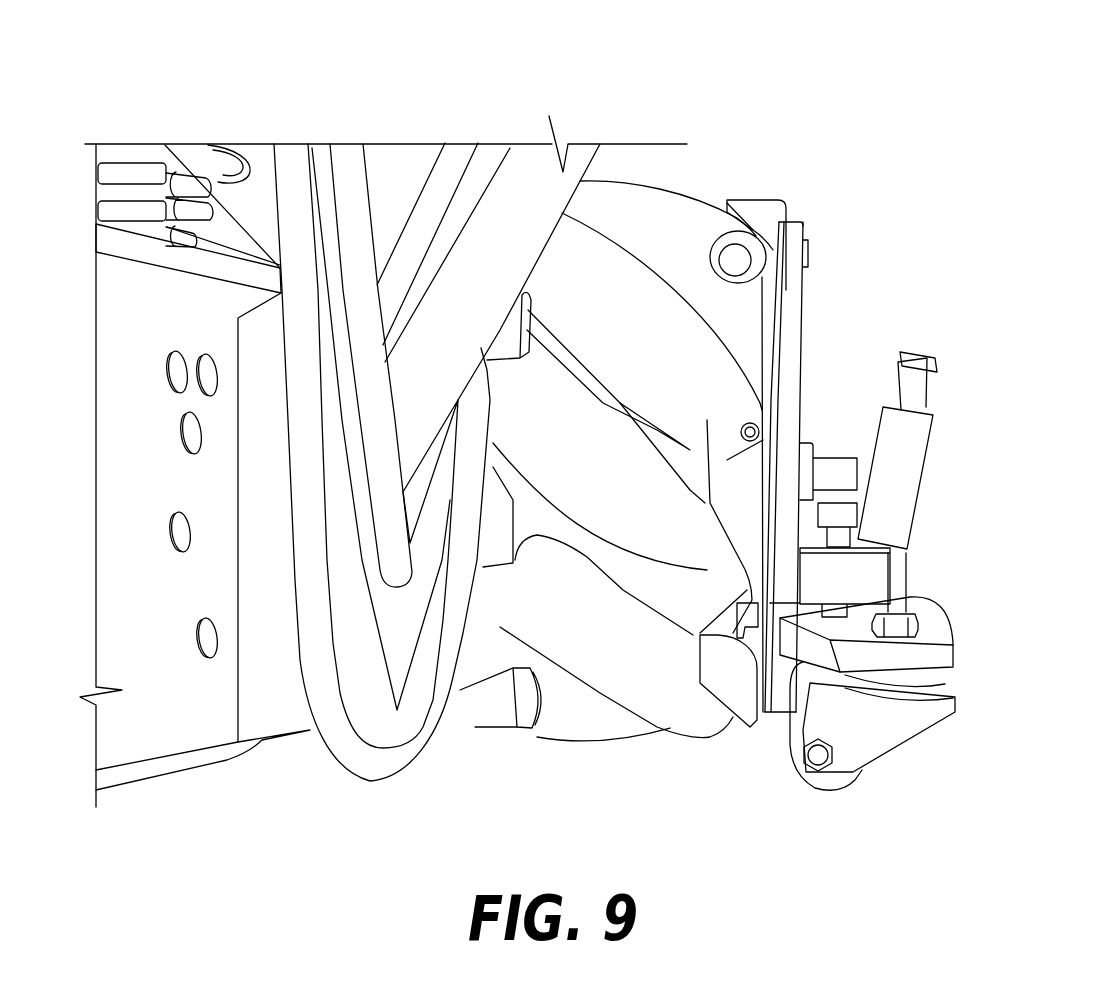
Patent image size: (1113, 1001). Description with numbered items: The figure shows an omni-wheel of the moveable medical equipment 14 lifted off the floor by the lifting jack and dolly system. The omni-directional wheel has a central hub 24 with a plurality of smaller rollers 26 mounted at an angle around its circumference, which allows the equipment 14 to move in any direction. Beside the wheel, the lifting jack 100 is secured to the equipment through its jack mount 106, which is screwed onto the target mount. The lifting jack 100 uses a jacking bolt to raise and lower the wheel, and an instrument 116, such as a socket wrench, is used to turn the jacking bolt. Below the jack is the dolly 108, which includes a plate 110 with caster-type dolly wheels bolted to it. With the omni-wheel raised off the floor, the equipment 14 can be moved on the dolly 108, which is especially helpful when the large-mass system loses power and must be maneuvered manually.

The moveable medical equipment 14 is at (222, 168).
The rollers 26 is at (665, 210).
The central hub 24 is at (760, 200).
The lifting jack 100 is at (792, 335).
The jack mount 106 is at (805, 258).
The instrument 116 is at (905, 518).
The plate 110 is at (927, 627).
The dolly 108 is at (947, 660).